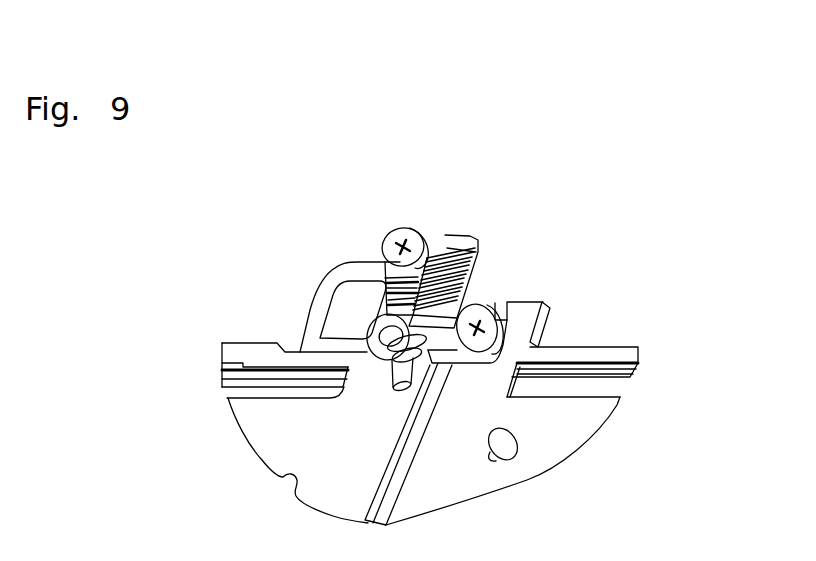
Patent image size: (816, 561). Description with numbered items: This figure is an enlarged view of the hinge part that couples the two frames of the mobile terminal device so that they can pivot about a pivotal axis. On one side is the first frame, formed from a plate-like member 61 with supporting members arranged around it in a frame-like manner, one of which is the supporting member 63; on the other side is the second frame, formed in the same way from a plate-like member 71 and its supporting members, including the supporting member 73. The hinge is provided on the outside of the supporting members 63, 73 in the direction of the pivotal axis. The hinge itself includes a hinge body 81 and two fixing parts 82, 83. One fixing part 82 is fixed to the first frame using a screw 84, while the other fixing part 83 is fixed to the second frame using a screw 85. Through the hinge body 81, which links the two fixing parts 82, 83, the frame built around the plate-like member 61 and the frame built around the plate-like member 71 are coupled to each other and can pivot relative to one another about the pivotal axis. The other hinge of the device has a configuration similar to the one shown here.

The plate-like member 61 is at (270, 445).
The supporting member 63 is at (254, 353).
The plate-like member 71 is at (570, 445).
The supporting member 73 is at (583, 355).
The hinge body 81 is at (487, 272).
The fixing part 82 is at (437, 225).
The fixing part 83 is at (510, 393).
The screw 84 is at (397, 250).
The screw 85 is at (507, 303).